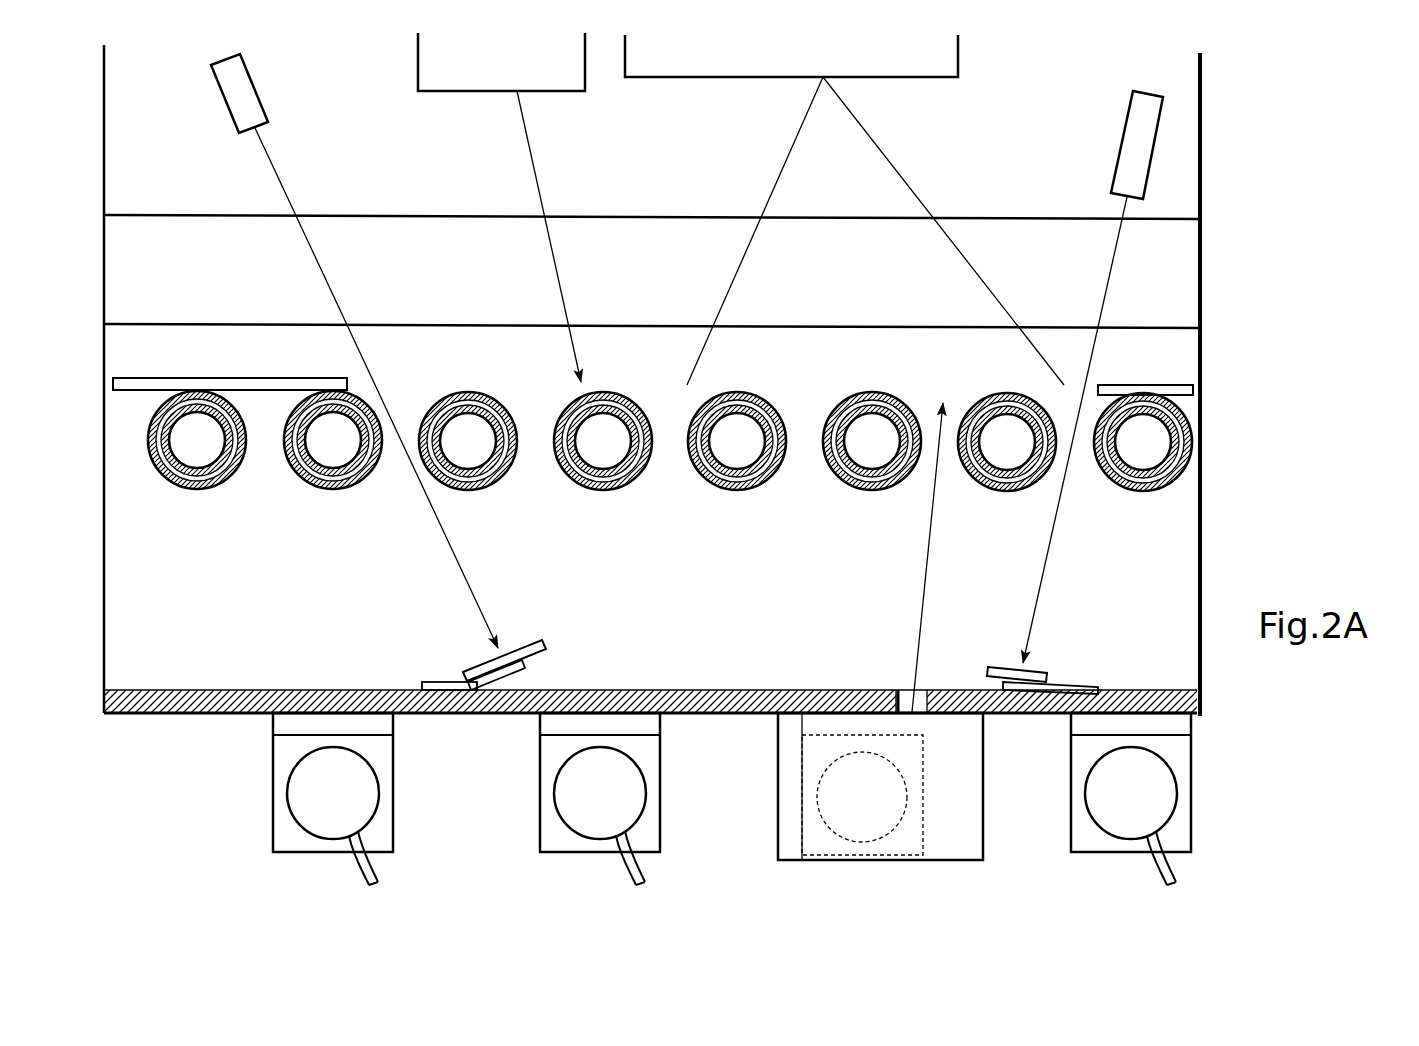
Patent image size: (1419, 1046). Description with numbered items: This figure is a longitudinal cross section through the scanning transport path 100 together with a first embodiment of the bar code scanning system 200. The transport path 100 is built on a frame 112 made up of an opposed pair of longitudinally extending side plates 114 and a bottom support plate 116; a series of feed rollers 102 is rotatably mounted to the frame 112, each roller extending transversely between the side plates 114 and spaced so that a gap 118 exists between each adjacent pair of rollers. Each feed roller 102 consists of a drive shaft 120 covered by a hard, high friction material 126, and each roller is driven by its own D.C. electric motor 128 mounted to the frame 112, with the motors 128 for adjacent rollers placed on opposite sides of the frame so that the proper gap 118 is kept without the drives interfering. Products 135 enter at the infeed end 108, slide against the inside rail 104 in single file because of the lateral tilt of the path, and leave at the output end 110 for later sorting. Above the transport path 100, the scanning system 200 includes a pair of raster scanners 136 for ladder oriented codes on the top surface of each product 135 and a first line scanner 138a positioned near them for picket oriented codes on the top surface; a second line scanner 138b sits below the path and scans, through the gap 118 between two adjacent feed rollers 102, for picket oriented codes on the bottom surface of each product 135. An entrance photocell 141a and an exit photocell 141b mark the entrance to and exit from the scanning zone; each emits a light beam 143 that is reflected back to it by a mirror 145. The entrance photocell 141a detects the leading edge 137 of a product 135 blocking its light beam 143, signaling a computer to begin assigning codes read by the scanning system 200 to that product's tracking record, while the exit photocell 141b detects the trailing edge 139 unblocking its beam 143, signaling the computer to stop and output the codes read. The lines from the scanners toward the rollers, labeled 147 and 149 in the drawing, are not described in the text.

The scanning transport path 100 is at (1233, 309).
The feed roller 102 is at (704, 446).
The inside rail 104 is at (1170, 352).
The infeed end 108 is at (134, 361).
The output end 110 is at (1300, 397).
The frame 112 is at (697, 708).
The side plate 114 is at (1165, 573).
The bottom support plate 116 is at (1200, 715).
The gap 118 is at (402, 455).
The drive shaft 120 is at (445, 395).
The high friction material 126 is at (497, 489).
The electric motor 128 is at (393, 775).
The product 135 is at (207, 378).
The raster scanner 136 is at (893, 72).
The leading edge 137 is at (357, 380).
The first line scanner 138a is at (478, 87).
The second line scanner 138b is at (940, 863).
The trailing edge 139 is at (1095, 387).
The entrance photocell 141a is at (237, 112).
The exit photocell 141b is at (1123, 152).
The light beam 143 is at (463, 568).
The mirror 145 is at (545, 643).
The light beam 147 is at (777, 183).
The light beam 149 is at (542, 188).
The bar code scanning system 200 is at (749, 463).